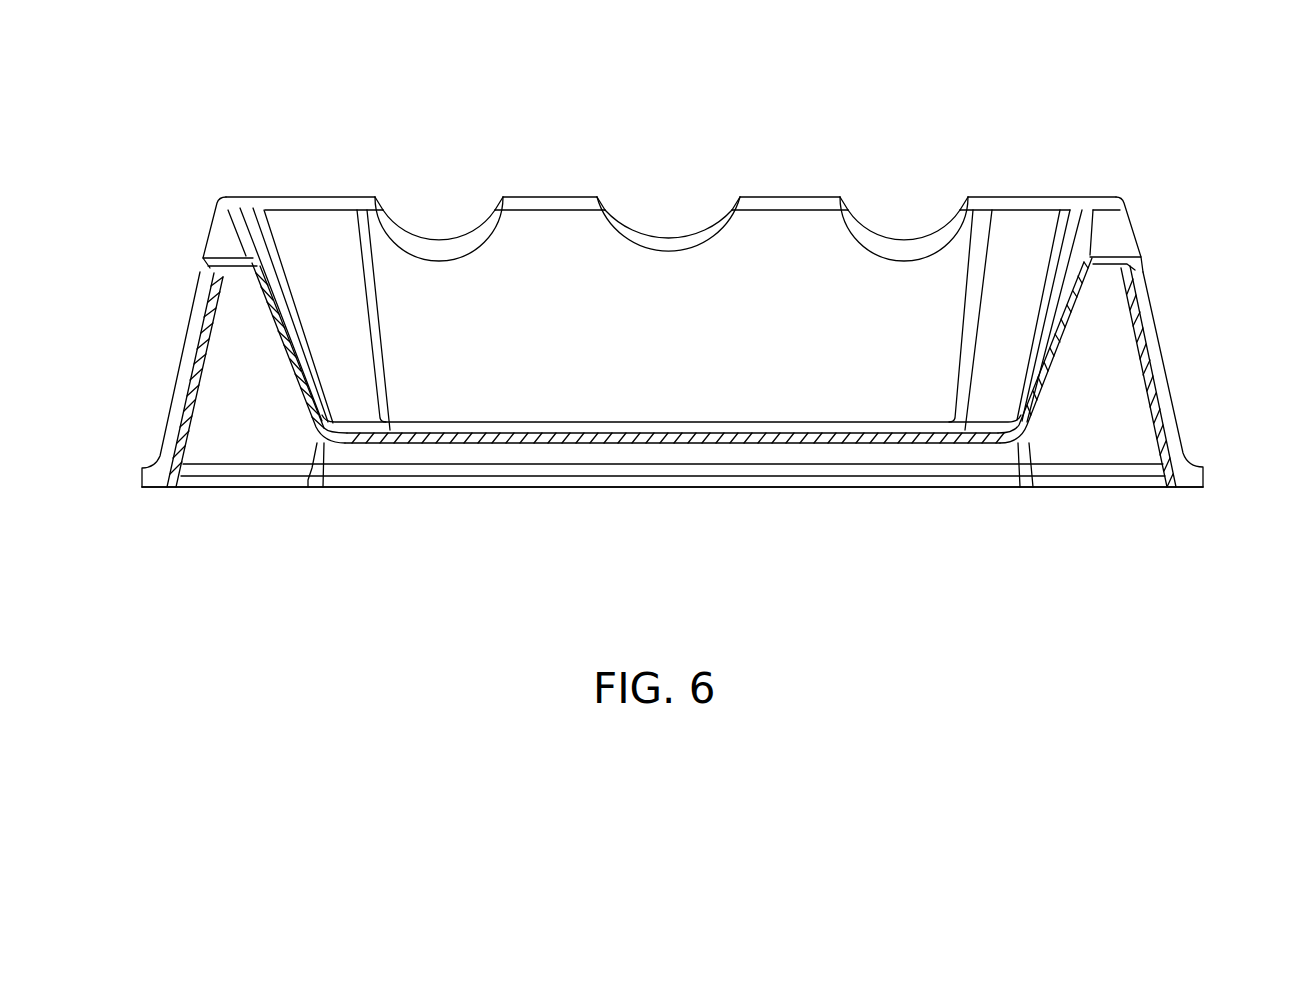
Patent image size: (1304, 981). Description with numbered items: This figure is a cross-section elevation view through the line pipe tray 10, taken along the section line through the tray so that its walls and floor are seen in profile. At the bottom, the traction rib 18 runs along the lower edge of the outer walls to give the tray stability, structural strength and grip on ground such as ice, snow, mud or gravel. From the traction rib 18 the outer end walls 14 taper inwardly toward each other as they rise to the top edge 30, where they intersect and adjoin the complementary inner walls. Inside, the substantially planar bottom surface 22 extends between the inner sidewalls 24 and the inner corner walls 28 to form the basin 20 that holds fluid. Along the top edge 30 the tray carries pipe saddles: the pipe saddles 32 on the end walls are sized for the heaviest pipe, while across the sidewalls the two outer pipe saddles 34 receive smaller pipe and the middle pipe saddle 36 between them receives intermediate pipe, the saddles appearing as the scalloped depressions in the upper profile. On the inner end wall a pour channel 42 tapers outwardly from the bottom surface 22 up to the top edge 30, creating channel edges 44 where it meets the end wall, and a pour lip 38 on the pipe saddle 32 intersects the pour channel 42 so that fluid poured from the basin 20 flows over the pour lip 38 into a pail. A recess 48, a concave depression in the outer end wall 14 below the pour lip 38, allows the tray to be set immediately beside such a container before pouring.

The line pipe tray 10 is at (140, 107).
The outer end wall 14 is at (210, 230).
The traction rib 18 is at (1208, 473).
The basin 20 is at (912, 293).
The bottom surface 22 is at (885, 440).
The inner sidewall 24 is at (798, 273).
The inner corner wall 28 is at (332, 242).
The top edge 30 is at (308, 192).
The pipe saddle 32 is at (227, 250).
The outer pipe saddle 34 is at (440, 225).
The middle pipe saddle 36 is at (678, 210).
The pour lip 38 is at (200, 275).
The pour channel 42 is at (290, 327).
The channel edge 44 is at (257, 230).
The recess 48 is at (160, 425).